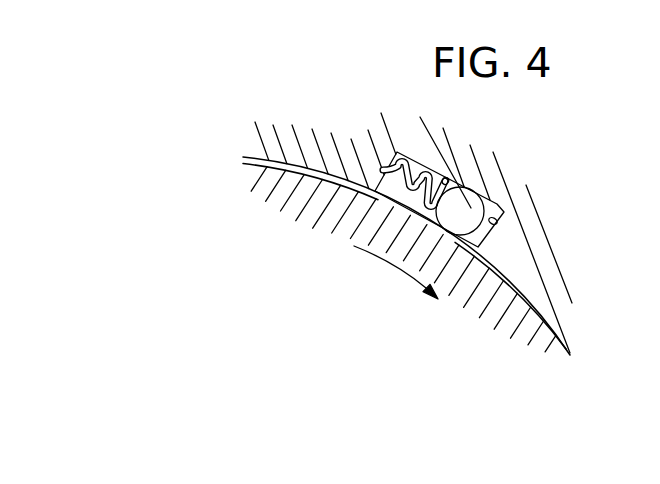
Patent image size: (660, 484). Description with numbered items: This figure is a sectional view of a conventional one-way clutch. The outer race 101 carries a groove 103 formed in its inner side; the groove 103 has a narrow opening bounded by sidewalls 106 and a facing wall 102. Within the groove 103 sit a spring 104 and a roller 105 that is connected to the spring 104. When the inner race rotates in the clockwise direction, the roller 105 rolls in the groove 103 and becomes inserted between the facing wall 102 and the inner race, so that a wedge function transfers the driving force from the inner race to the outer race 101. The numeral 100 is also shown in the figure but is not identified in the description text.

The tire 100 is at (290, 189).
The outer race 101 is at (537, 273).
The facing wall 102 is at (458, 213).
The groove 103 is at (447, 177).
The spring 104 is at (397, 152).
The roller 105 is at (472, 200).
The sidewalls 106 is at (497, 222).